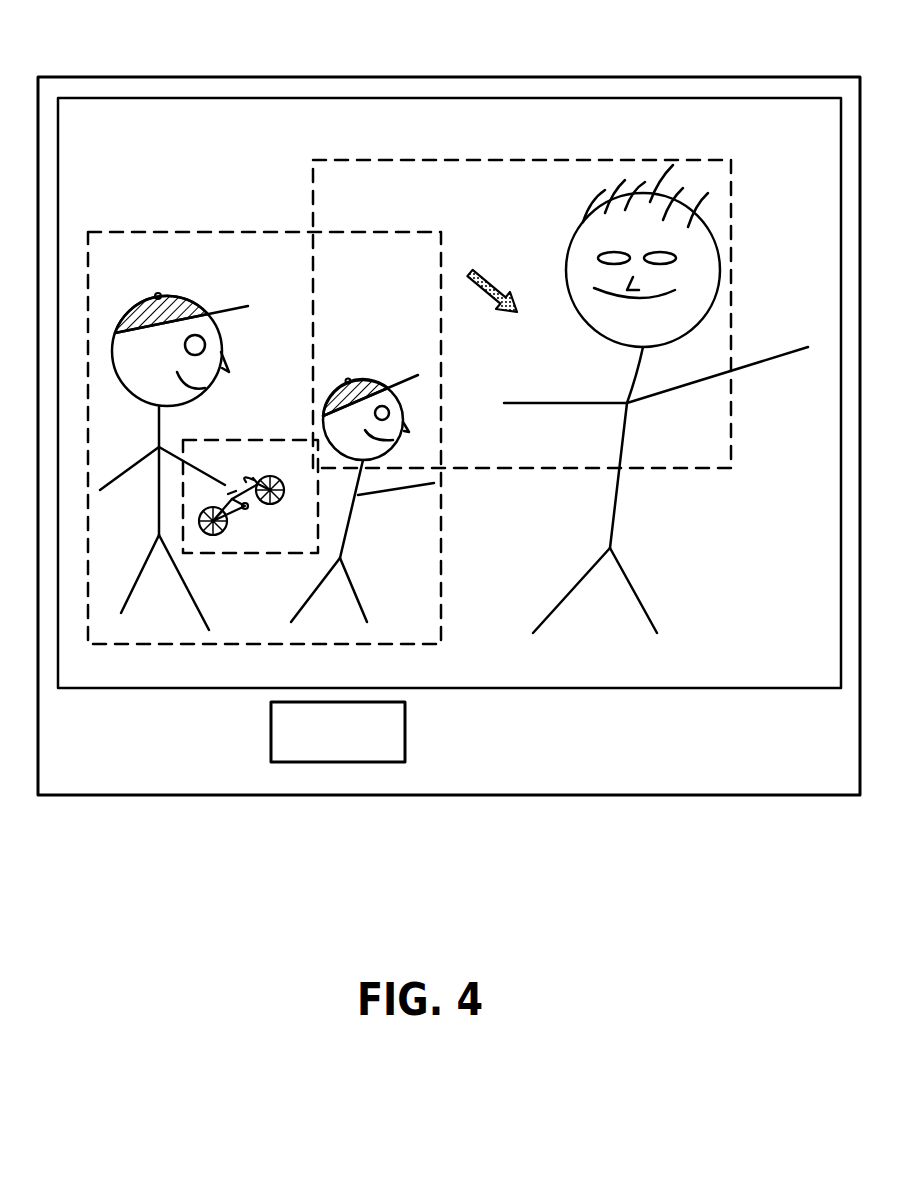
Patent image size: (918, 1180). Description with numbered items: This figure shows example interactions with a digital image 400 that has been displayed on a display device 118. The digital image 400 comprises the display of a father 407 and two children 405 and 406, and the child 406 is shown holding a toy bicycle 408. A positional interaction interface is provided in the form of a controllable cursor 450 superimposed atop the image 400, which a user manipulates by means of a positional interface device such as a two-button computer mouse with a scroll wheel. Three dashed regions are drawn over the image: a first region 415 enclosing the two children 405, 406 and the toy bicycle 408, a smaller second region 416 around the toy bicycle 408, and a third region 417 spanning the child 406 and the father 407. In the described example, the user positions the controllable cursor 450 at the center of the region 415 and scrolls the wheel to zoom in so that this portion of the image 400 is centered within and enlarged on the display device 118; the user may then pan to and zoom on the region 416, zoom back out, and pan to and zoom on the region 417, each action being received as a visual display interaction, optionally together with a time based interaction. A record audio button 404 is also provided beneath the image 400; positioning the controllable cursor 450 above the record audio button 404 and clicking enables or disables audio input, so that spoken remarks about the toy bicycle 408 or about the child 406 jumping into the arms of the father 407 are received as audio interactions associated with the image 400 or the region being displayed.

The display device 118 is at (265, 77).
The digital image 400 is at (160, 139).
The record audio button 404 is at (405, 727).
The child 405 is at (151, 297).
The child 406 is at (335, 385).
The father 407 is at (702, 281).
The toy bicycle 408 is at (226, 520).
The region 415 is at (193, 232).
The region 416 is at (231, 440).
The region 417 is at (487, 470).
The controllable cursor 450 is at (482, 273).